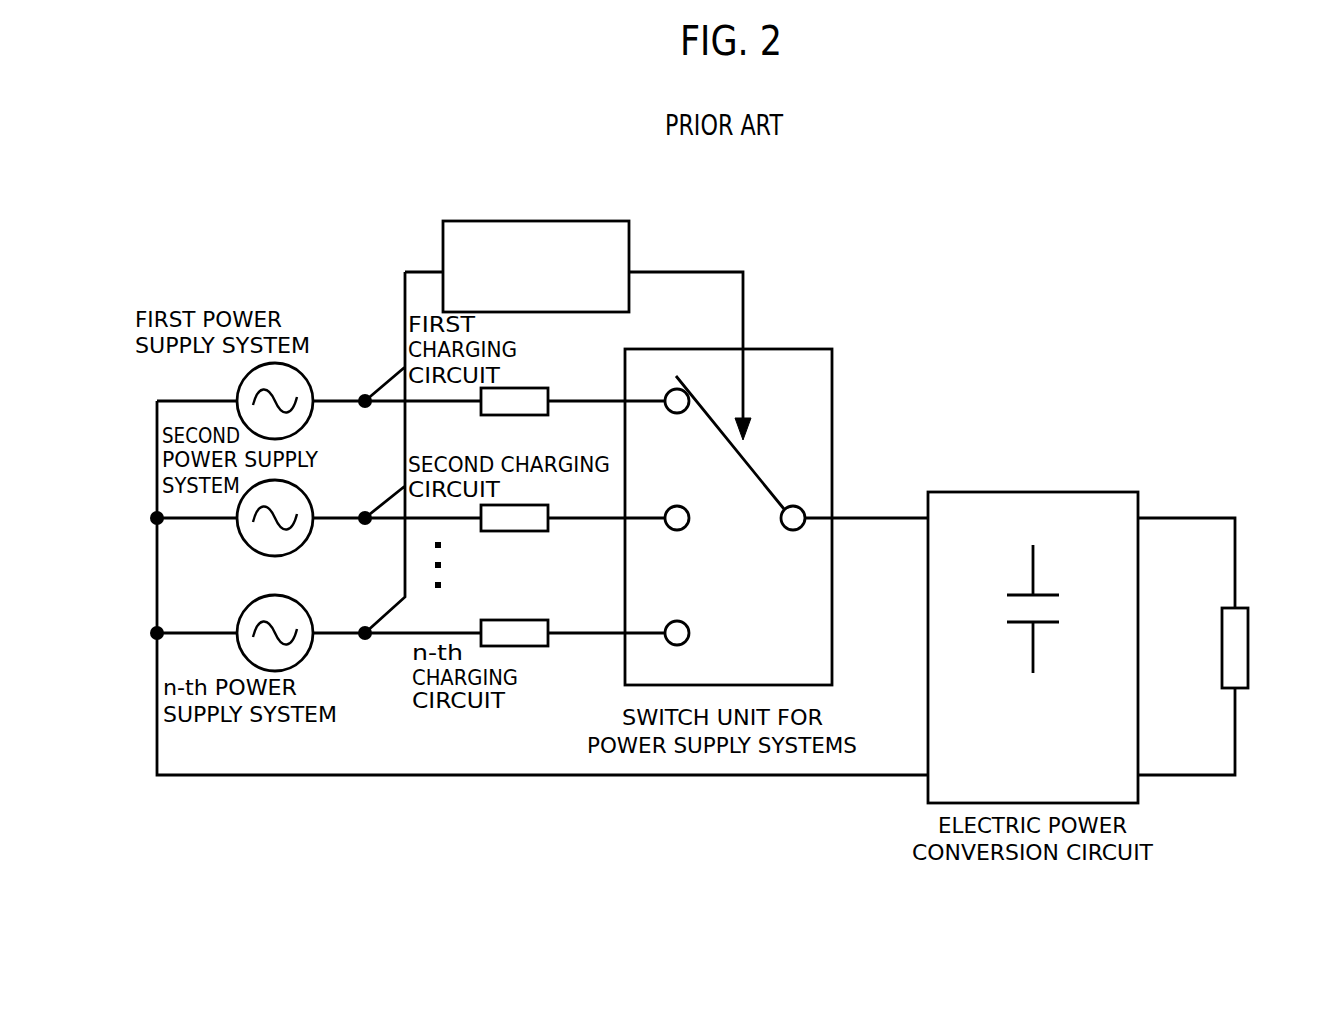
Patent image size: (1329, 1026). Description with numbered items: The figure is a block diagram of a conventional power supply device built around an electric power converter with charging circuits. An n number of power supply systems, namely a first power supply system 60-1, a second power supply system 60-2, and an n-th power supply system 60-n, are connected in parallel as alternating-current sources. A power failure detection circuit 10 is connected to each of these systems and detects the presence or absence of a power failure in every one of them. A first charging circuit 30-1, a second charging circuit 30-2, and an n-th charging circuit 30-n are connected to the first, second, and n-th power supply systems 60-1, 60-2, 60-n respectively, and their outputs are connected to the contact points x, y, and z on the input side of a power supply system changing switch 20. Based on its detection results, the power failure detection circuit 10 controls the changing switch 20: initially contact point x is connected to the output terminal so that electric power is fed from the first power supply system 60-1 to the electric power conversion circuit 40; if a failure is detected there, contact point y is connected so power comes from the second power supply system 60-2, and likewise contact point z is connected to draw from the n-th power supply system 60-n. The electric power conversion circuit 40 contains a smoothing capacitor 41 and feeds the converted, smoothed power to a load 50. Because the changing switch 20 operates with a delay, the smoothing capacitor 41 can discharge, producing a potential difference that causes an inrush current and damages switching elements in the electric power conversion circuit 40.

The power failure detection circuit 10 is at (545, 221).
The power supply system changing switch 20 is at (780, 349).
The first charging circuit 30-1 is at (528, 388).
The second charging circuit 30-2 is at (538, 531).
The n-th charging circuit 30-n is at (518, 647).
The electric power conversion circuit 40 is at (1033, 624).
The smoothing capacitor 41 is at (1043, 588).
The load 50 is at (1249, 625).
The first power supply system 60-1 is at (304, 375).
The second power supply system 60-2 is at (305, 492).
The n-th power supply system 60-n is at (305, 610).